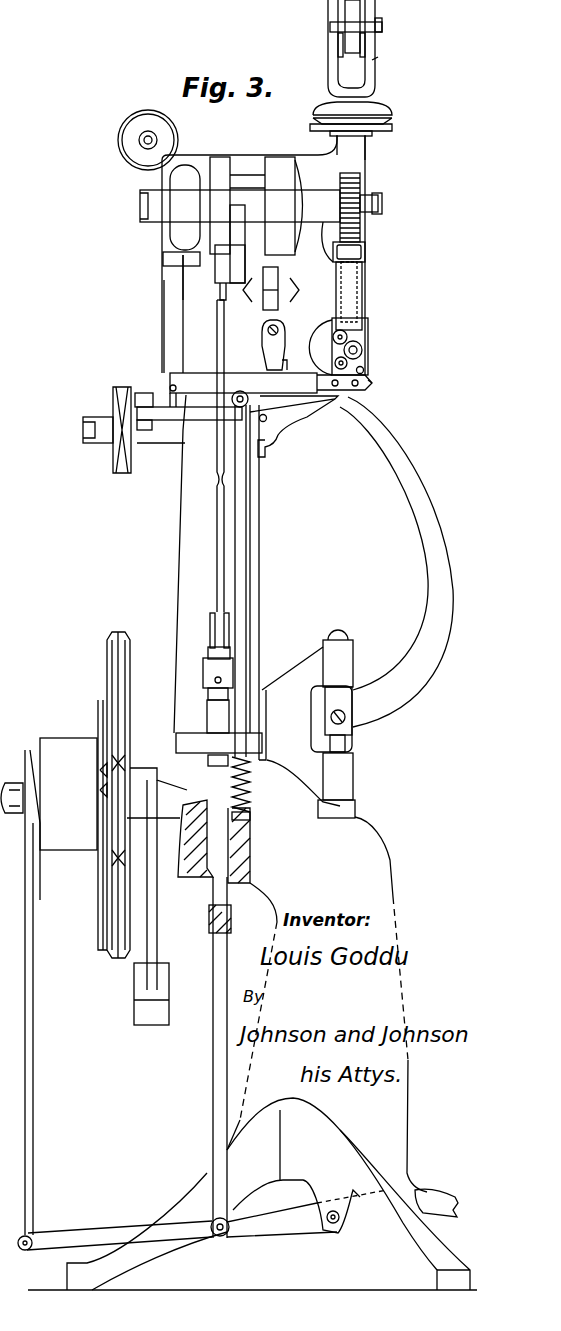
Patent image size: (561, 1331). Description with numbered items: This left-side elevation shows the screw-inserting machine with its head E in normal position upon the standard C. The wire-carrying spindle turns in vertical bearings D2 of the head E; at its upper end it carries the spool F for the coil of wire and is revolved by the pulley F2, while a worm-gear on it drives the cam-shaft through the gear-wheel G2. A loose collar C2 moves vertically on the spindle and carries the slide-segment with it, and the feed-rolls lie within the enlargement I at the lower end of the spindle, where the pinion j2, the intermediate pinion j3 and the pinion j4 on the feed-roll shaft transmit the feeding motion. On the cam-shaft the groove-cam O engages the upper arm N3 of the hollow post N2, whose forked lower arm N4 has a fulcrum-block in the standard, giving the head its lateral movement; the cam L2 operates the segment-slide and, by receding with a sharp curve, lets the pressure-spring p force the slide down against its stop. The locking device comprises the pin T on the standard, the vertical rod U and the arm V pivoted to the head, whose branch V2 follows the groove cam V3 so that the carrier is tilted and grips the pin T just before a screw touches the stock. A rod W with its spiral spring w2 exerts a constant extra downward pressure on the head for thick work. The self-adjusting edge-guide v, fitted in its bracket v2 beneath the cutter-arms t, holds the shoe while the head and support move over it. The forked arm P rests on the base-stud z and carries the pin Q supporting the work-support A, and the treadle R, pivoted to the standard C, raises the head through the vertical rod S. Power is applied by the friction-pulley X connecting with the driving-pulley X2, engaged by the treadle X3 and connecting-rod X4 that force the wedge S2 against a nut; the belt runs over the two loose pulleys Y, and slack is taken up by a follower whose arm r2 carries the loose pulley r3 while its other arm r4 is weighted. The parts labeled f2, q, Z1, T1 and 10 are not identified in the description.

The standard C is at (252, 712).
The loose pulleys Y is at (118, 144).
The spool F is at (355, 48).
The bracket screw f2 is at (375, 60).
The spindle pulley F2 is at (362, 119).
The vertical bearings D2 is at (328, 163).
The groove-cam O is at (240, 207).
The groove cam V3 is at (218, 205).
The branch of arm V V2 is at (247, 237).
The cam L2 is at (284, 206).
The gear-wheel G2 is at (362, 228).
The loose collar C2 is at (349, 252).
The upper arm of post N3 is at (181, 259).
The hollow post N2 is at (168, 318).
The arm V is at (230, 272).
The vertical rod U is at (210, 456).
The head E is at (282, 285).
The handle q is at (271, 345).
The enlargement of spindle I is at (368, 328).
The pinion j2 is at (339, 332).
The intermediate pinion j3 is at (364, 351).
The feed-roll shaft pinion j4 is at (336, 359).
The cutter-arms t is at (374, 384).
The lower arm of post N4 is at (148, 378).
The self-adjusting edge-guide v is at (294, 407).
The bracket v2 is at (296, 428).
The rod W is at (252, 560).
The work-support A is at (396, 562).
The clamp jaws Z1 is at (207, 652).
The pin T is at (202, 676).
The collar T1 is at (206, 709).
The driving-pulley X2 is at (130, 668).
The friction-pulley X is at (68, 794).
The wedge S2 is at (20, 816).
The connecting-rod X4 is at (40, 1067).
The loose pulley r3 is at (110, 780).
The follower arm r2 is at (157, 793).
The weighted arm r4 is at (154, 902).
The spiral spring w2 is at (229, 783).
The nut 10 is at (248, 804).
The pressure-spring p is at (214, 841).
The forked arm P is at (266, 724).
The pin Q is at (331, 720).
The base-stud z is at (356, 810).
The vertical rod S is at (209, 1057).
The treadle X3 is at (115, 1228).
The treadle R is at (334, 1204).